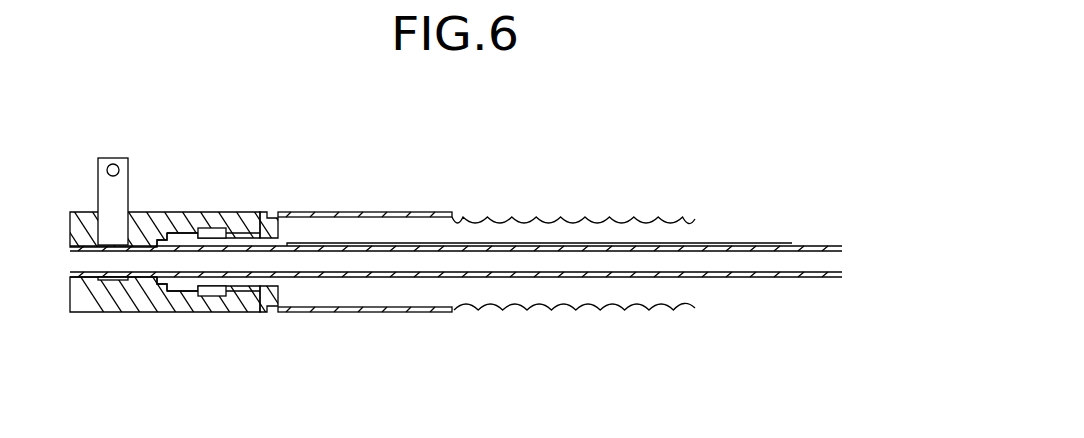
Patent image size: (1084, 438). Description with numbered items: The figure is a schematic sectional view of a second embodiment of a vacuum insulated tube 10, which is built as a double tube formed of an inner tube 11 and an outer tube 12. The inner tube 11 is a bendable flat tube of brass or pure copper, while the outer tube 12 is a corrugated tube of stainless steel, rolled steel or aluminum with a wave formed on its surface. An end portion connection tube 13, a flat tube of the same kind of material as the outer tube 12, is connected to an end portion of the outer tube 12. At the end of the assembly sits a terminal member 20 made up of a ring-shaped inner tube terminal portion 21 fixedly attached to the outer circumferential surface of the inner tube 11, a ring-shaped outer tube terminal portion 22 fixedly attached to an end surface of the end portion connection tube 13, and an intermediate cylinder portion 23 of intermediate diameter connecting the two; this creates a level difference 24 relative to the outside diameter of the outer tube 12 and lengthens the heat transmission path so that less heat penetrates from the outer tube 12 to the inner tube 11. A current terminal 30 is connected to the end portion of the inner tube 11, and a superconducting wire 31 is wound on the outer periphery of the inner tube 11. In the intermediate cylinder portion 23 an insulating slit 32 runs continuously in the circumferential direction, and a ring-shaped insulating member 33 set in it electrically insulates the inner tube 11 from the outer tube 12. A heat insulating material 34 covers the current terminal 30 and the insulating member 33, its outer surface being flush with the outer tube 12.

The vacuum insulated tube 10 is at (456, 246).
The inner tube 11 is at (550, 278).
The outer tube 12 is at (475, 217).
The end portion connection tube 13 is at (402, 211).
The terminal member 20 is at (197, 259).
The inner tube terminal portion 21 is at (163, 285).
The outer tube terminal portion 22 is at (265, 215).
The intermediate cylinder portion 23 is at (176, 232).
The level difference 24 is at (258, 297).
The current terminal 30 is at (113, 157).
The superconducting wire 31 is at (557, 242).
The insulating slit 32 is at (205, 296).
The insulating member 33 is at (219, 296).
The heat insulating material 34 is at (97, 312).